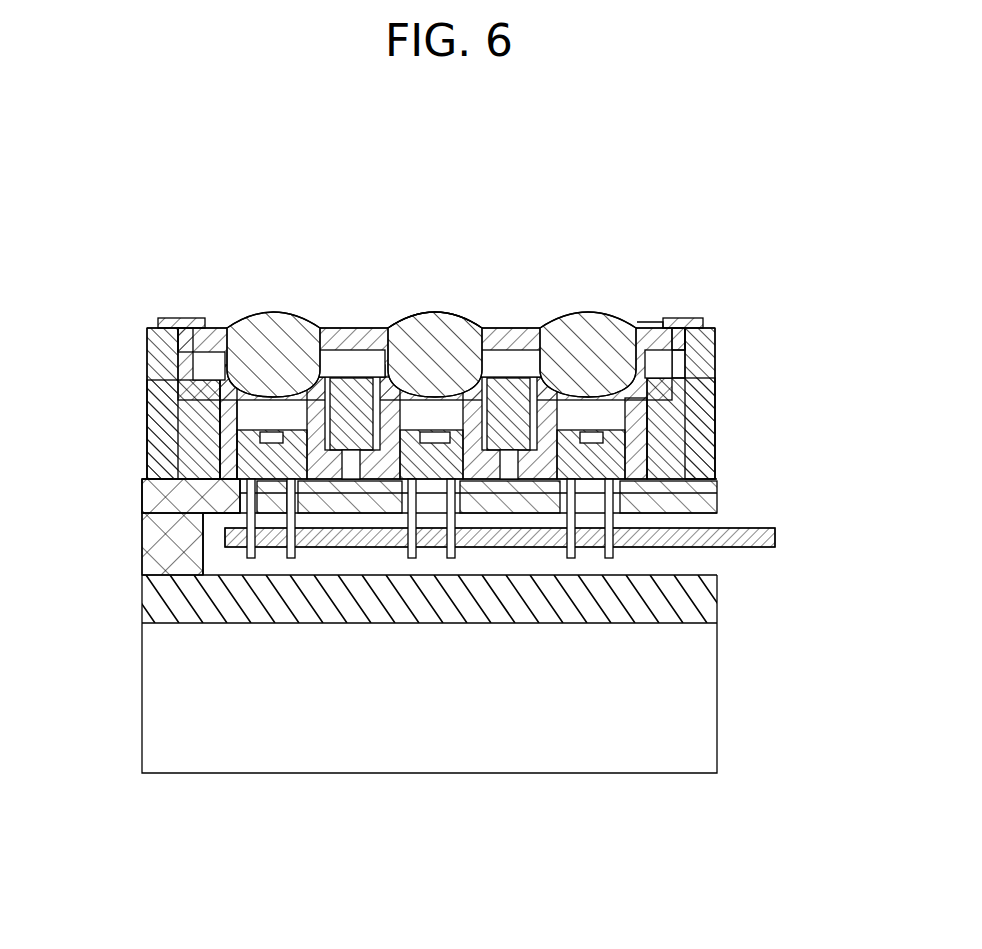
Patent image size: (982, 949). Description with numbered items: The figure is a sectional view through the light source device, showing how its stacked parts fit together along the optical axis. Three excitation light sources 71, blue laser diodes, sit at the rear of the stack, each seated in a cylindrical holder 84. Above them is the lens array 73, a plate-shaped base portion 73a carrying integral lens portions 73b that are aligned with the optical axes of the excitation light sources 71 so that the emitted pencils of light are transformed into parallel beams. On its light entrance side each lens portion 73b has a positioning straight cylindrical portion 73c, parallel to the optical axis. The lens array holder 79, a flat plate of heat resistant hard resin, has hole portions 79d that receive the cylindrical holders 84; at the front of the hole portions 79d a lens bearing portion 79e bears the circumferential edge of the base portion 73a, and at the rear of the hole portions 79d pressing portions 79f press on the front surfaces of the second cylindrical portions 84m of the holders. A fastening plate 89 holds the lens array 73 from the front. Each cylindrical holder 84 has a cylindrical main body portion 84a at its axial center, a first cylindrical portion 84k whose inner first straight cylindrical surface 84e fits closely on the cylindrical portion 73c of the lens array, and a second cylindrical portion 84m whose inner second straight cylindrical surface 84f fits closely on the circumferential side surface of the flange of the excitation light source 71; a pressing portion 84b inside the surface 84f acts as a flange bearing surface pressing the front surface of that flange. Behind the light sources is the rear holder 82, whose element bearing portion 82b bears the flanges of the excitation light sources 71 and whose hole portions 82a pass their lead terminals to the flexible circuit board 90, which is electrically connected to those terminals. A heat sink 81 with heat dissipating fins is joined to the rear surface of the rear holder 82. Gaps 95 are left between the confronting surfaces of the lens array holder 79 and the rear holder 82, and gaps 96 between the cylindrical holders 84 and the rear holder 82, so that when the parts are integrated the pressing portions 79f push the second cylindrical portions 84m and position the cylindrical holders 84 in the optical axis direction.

The excitation light source 71 is at (433, 428).
The lens array 73 is at (593, 318).
The base portion 73a is at (660, 320).
The lens portion 73b is at (433, 312).
The positioning straight cylindrical portion 73c is at (706, 362).
The lens array holder 79 is at (148, 356).
The hole portion 79d is at (273, 417).
The lens bearing portion 79e is at (198, 320).
The pressing portion 79f is at (215, 440).
The heat sink 81 is at (153, 600).
The rear holder 82 is at (144, 497).
The hole portion 82a is at (203, 513).
The element bearing portion 82b is at (230, 495).
The cylindrical holder 84 is at (200, 410).
The cylindrical main body portion 84a is at (716, 432).
The pressing portion 84b is at (547, 480).
The first straight cylindrical surface 84e is at (716, 392).
The second straight cylindrical surface 84f is at (683, 513).
The first cylindrical portion 84k is at (541, 407).
The second cylindrical portion 84m is at (200, 462).
The fastening plate 89 is at (174, 318).
The flexible circuit board 90 is at (752, 547).
The gap 95 is at (718, 494).
The gap 96 is at (718, 512).